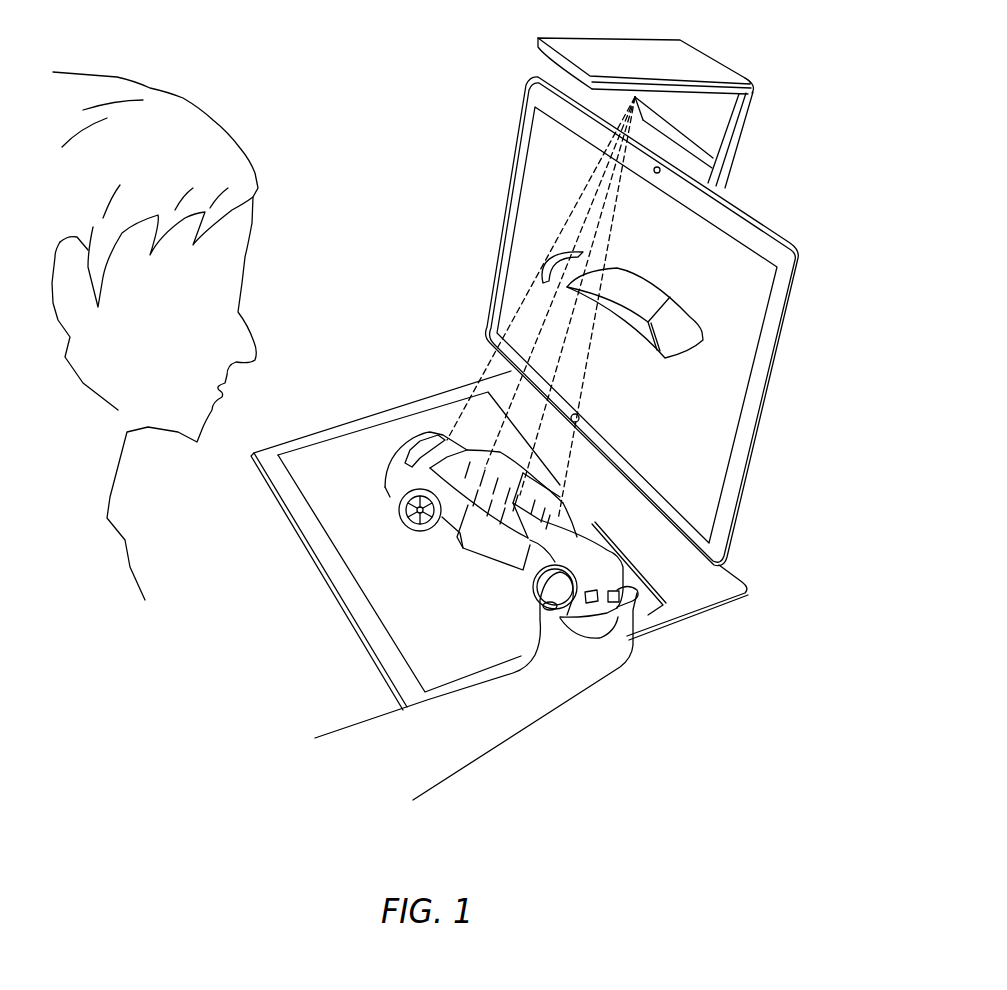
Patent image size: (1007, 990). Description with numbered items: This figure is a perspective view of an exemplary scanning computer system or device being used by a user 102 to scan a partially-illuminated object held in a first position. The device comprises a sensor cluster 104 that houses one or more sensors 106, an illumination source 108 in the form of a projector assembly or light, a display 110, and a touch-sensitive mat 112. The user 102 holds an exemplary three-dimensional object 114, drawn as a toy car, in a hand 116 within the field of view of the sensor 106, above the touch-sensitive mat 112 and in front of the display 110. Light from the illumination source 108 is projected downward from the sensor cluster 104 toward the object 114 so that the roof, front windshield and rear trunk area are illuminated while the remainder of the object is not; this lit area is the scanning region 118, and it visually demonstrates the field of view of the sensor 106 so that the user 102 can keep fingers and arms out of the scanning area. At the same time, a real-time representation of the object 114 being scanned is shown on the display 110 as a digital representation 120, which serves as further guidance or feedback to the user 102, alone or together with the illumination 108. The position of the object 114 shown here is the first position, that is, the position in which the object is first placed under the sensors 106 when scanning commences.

The user 102 is at (183, 113).
The sensor cluster 104 is at (628, 44).
The sensor 106 is at (690, 91).
The illumination source 108 is at (630, 100).
The display 110 is at (770, 245).
The touch-sensitive mat 112 is at (723, 585).
The three-dimensional object 114 is at (467, 553).
The hand 116 is at (483, 738).
The scanning region 118 is at (482, 462).
The digital representation 120 is at (655, 280).